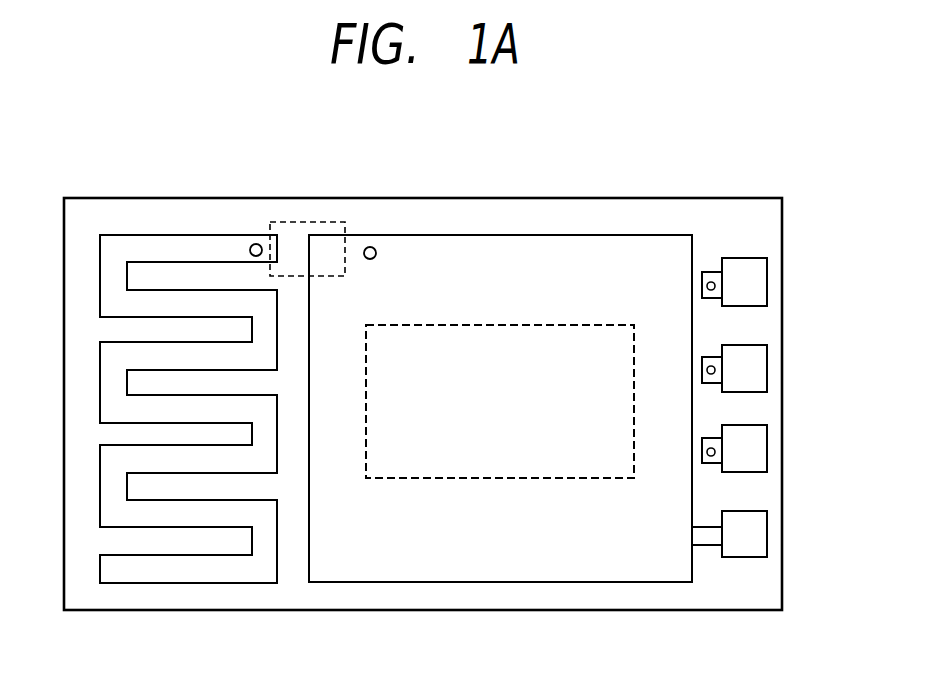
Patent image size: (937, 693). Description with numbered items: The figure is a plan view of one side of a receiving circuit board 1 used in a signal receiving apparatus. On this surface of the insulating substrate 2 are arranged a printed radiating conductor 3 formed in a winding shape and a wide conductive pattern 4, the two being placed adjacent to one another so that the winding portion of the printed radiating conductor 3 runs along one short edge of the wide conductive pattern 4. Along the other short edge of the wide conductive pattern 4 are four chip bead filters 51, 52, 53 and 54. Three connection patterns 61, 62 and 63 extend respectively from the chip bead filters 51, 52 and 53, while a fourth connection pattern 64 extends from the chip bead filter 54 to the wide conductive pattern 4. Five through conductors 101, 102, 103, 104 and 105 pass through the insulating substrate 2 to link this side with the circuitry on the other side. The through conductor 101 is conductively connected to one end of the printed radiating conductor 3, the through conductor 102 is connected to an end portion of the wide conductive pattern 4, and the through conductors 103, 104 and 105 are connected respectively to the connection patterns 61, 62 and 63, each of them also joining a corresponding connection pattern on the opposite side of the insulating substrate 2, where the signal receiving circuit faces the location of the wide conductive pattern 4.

The receiving circuit board 1 is at (526, 194).
The insulating substrate 2 is at (777, 213).
The printed radiating conductor 3 is at (110, 302).
The wide conductive pattern 4 is at (503, 567).
The chip bead filter 51 is at (767, 268).
The chip bead filter 52 is at (767, 352).
The chip bead filter 53 is at (767, 437).
The chip bead filter 54 is at (767, 522).
The connection pattern 61 is at (710, 272).
The connection pattern 62 is at (706, 357).
The connection pattern 63 is at (706, 438).
The connection pattern 64 is at (710, 527).
The through conductor 101 is at (256, 244).
The through conductor 102 is at (370, 247).
The through conductor 103 is at (707, 286).
The through conductor 104 is at (707, 370).
The through conductor 105 is at (707, 453).